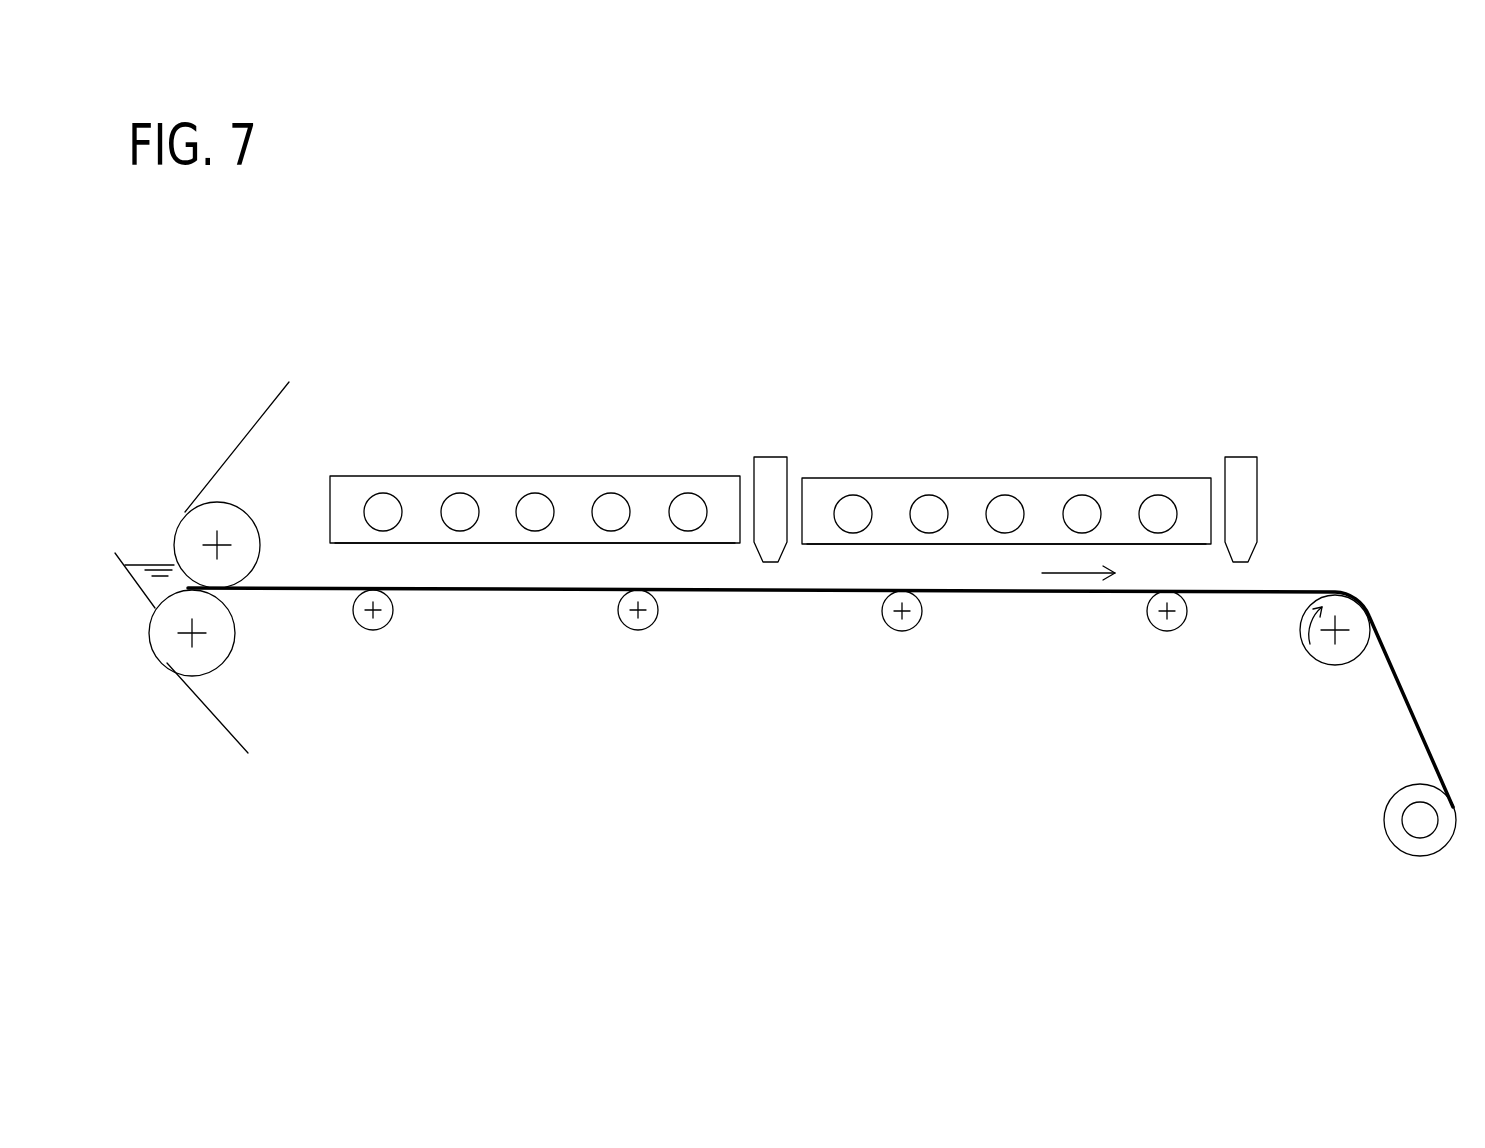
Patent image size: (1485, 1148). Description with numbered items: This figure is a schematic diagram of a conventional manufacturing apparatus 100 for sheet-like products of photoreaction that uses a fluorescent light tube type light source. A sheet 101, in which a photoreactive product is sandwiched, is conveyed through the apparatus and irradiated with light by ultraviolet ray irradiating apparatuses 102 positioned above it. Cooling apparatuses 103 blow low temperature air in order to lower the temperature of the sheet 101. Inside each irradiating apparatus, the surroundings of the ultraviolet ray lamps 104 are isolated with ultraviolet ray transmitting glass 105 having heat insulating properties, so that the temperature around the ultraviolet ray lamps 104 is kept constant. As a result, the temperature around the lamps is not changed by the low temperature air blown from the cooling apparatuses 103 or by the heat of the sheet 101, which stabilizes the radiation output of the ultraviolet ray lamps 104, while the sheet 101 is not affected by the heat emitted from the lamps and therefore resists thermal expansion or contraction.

The manufacturing apparatus for sheet-like products of photoreaction 100 is at (1013, 352).
The sheet 101 is at (540, 592).
The ultraviolet ray irradiating apparatus 102 is at (577, 475).
The cooling apparatus 103 is at (778, 482).
The ultraviolet ray lamp 104 is at (392, 508).
The ultraviolet ray transmitting glass 105 is at (458, 555).